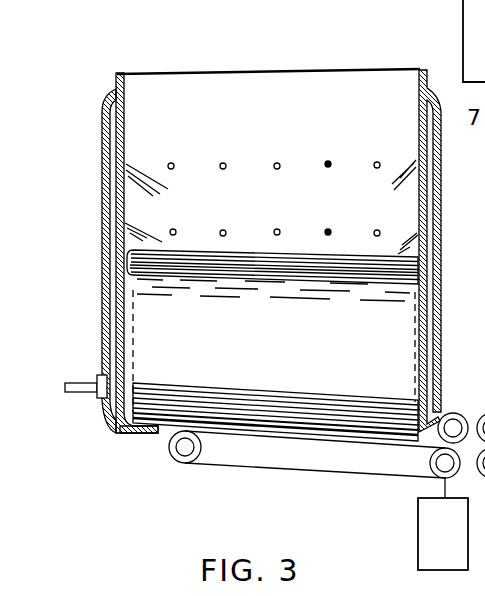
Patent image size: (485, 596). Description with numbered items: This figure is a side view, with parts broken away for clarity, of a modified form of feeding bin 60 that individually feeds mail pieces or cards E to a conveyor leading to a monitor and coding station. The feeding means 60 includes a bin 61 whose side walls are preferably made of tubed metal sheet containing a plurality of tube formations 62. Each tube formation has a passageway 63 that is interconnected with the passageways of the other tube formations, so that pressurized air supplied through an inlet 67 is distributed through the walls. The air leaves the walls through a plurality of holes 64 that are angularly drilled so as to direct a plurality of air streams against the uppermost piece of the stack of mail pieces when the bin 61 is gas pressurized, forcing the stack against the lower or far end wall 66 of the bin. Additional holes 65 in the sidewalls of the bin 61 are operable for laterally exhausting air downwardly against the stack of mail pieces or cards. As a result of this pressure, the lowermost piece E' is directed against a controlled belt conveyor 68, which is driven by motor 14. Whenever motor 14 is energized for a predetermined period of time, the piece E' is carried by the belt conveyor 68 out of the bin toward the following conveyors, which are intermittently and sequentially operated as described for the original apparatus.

The feeding bin 60 is at (155, 65).
The bin 61 is at (114, 78).
The tube formations 62 is at (102, 152).
The passageway 63 is at (103, 212).
The holes 64 is at (124, 159).
The holes 65 is at (172, 164).
The lower or far end wall 66 is at (140, 434).
The inlet 67 is at (70, 393).
The controlled belt conveyor 68 is at (221, 468).
The motor 14 is at (443, 524).
The mail pieces or cards E is at (304, 260).
The lowermost piece E' is at (275, 445).